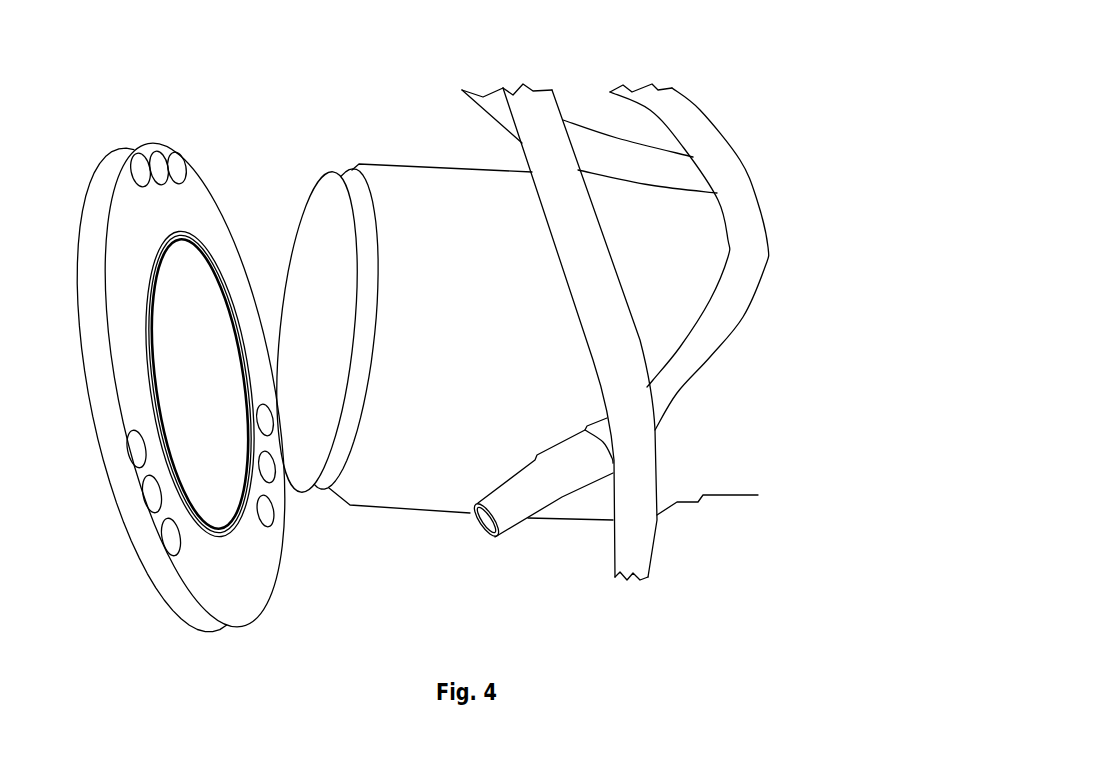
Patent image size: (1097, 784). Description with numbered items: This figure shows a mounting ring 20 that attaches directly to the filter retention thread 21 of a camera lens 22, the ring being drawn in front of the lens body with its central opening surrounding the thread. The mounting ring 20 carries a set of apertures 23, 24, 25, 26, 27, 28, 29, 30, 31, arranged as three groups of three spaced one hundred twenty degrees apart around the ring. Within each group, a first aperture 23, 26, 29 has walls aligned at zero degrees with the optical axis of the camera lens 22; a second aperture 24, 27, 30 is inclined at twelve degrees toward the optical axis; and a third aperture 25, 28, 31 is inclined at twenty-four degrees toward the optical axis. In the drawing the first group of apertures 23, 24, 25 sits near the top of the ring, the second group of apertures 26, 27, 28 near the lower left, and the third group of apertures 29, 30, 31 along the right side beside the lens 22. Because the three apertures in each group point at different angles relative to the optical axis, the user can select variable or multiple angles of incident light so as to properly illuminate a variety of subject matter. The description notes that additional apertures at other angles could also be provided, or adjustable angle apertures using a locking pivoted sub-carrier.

The mounting ring 20 is at (93, 347).
The filter retention thread 21 is at (163, 410).
The camera lens 22 is at (567, 496).
The first aperture 23 is at (138, 162).
The second aperture 24 is at (157, 158).
The third aperture 25 is at (177, 156).
The first aperture 26 is at (137, 460).
The second aperture 27 is at (152, 502).
The third aperture 28 is at (173, 545).
The first aperture 29 is at (272, 523).
The second aperture 30 is at (276, 479).
The third aperture 31 is at (262, 408).